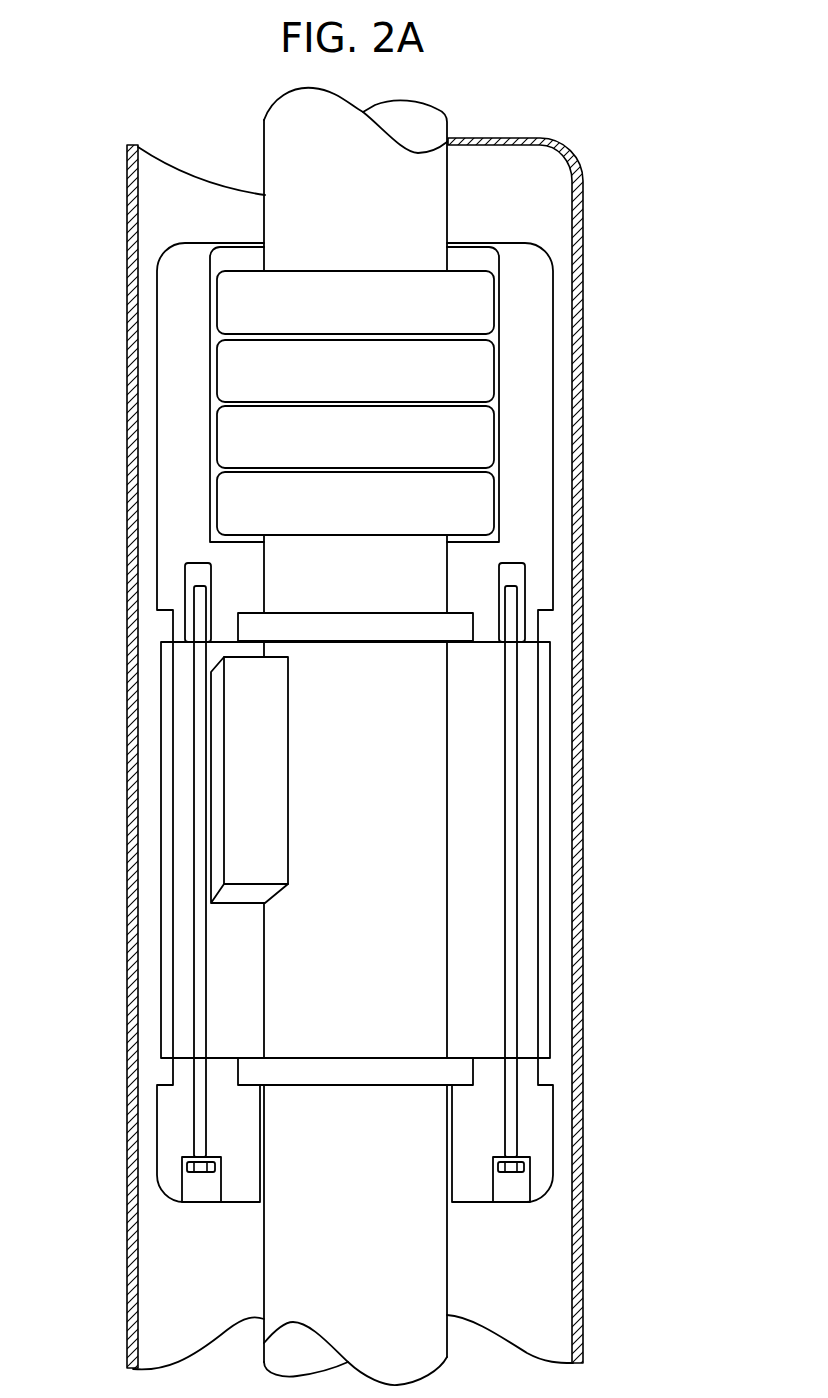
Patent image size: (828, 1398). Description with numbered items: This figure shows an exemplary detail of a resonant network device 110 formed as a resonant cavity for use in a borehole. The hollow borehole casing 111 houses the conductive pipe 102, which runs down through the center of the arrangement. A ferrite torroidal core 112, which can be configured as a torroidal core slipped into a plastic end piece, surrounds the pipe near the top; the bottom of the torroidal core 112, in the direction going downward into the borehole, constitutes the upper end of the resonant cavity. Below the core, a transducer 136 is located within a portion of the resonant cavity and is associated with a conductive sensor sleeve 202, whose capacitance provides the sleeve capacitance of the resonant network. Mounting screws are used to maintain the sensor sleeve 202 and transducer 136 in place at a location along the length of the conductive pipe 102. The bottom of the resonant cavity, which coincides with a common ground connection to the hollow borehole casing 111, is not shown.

The conductive pipe 102 is at (302, 202).
The resonant network device 110 is at (652, 1328).
The hollow borehole casing 111 is at (128, 610).
The torroidal core 112 is at (243, 368).
The transducer 136 is at (225, 830).
The conductive sensor sleeve 202 is at (160, 972).